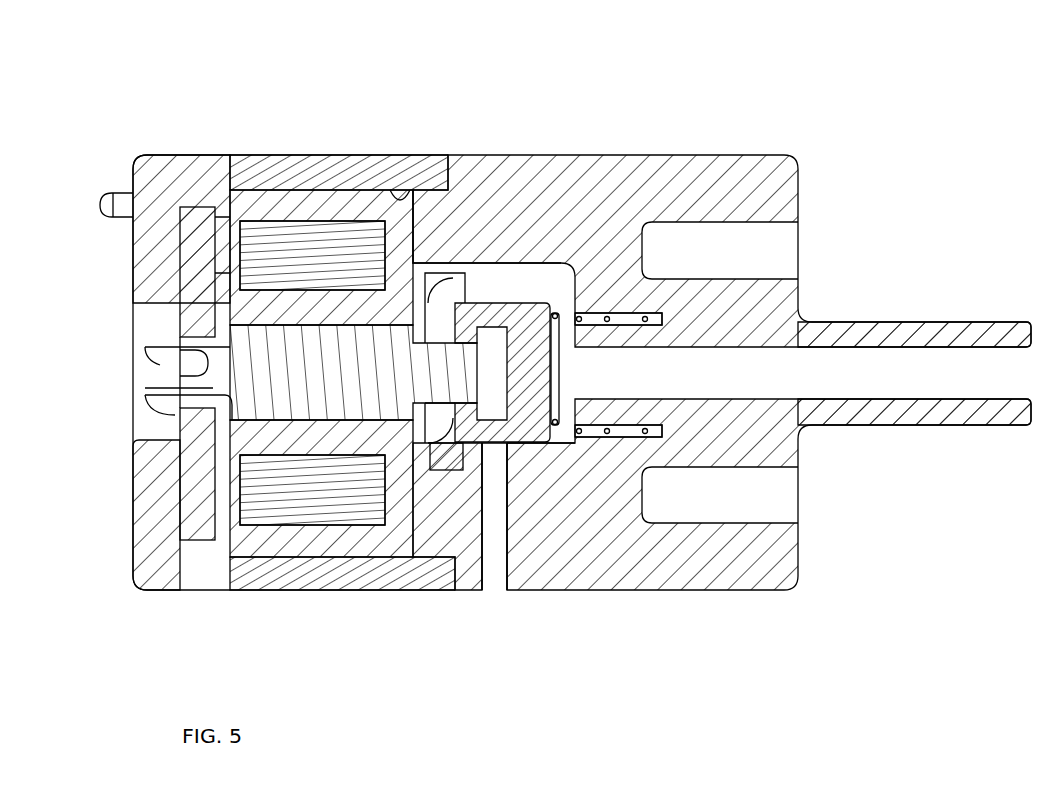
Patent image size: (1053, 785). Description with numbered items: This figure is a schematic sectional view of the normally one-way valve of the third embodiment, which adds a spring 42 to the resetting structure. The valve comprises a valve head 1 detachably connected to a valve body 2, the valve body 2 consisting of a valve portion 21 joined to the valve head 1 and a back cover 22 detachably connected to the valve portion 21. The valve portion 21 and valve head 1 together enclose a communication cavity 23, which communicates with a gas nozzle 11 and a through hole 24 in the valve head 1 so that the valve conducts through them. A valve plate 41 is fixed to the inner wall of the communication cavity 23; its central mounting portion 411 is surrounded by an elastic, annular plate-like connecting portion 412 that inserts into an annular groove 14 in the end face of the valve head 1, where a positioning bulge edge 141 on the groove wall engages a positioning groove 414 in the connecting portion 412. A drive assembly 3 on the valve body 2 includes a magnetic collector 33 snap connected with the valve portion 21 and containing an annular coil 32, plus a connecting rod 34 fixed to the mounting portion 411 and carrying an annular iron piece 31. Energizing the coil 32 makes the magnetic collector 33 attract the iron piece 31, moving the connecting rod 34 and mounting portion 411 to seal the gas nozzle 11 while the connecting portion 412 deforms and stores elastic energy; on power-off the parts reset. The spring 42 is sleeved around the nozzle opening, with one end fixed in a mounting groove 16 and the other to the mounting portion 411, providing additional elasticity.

The valve head 1 is at (812, 158).
The gas nozzle 11 is at (848, 320).
The annular groove 14 is at (463, 225).
The mounting groove 16 is at (662, 432).
The valve body 2 is at (258, 78).
The valve portion 21 is at (286, 148).
The back cover 22 is at (193, 140).
The communication cavity 23 is at (545, 462).
The through hole 24 is at (495, 540).
The drive assembly 3 is at (70, 218).
The iron piece 31 is at (247, 378).
The coil 32 is at (250, 260).
The magnetic collector 33 is at (228, 460).
The connecting rod 34 is at (240, 465).
The valve plate 41 is at (548, 74).
The mounting portion 411 is at (492, 305).
The connecting portion 412 is at (458, 225).
The positioning groove 414 is at (462, 510).
The spring 42 is at (560, 322).
The positioning bulge edge 141 is at (470, 515).